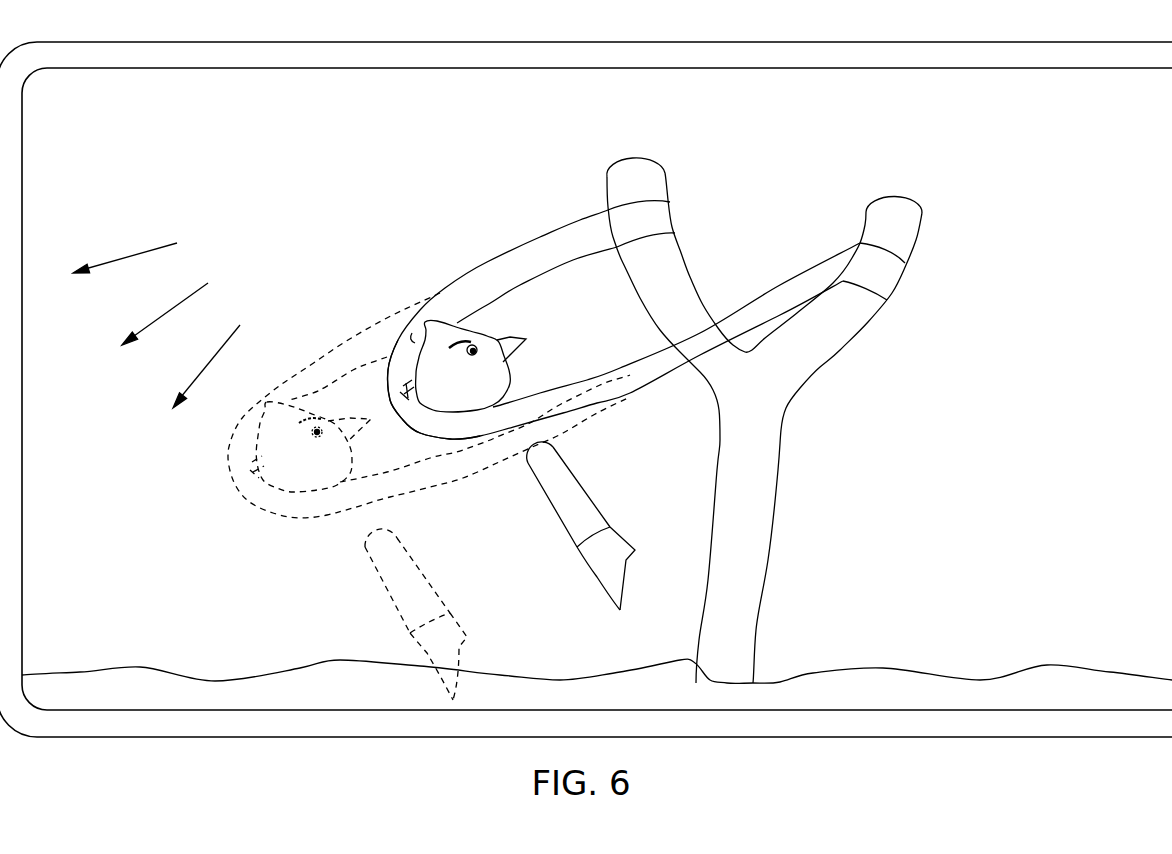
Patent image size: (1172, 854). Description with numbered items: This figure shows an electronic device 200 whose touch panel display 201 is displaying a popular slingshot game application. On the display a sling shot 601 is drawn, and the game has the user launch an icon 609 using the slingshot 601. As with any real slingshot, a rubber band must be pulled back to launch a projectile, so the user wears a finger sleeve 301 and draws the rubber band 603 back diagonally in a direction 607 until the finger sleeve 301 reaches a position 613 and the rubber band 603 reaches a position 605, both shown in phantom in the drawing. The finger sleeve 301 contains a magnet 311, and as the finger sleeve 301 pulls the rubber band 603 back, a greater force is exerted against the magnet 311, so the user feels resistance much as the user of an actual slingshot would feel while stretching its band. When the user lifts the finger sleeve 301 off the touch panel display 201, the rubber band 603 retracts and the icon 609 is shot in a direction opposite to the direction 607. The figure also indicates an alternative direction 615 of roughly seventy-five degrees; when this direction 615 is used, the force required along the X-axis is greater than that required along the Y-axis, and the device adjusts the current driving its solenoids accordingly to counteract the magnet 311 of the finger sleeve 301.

The electronic device 200 is at (1045, 738).
The touch panel display 201 is at (913, 692).
The finger sleeve 301 is at (548, 503).
The magnet 311 is at (530, 452).
The sling shot 601 is at (773, 541).
The rubber band 603 is at (398, 408).
The position of the rubber band 605 is at (238, 496).
The direction 607 is at (197, 380).
The icon 609 is at (420, 336).
The position of the finger sleeve 613 is at (386, 609).
The direction 615 is at (145, 327).